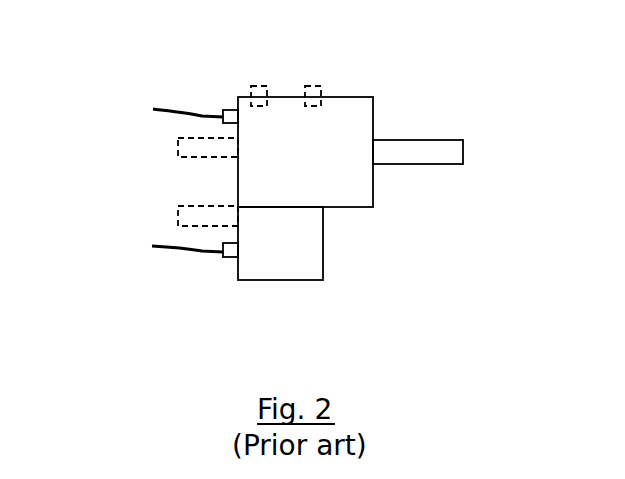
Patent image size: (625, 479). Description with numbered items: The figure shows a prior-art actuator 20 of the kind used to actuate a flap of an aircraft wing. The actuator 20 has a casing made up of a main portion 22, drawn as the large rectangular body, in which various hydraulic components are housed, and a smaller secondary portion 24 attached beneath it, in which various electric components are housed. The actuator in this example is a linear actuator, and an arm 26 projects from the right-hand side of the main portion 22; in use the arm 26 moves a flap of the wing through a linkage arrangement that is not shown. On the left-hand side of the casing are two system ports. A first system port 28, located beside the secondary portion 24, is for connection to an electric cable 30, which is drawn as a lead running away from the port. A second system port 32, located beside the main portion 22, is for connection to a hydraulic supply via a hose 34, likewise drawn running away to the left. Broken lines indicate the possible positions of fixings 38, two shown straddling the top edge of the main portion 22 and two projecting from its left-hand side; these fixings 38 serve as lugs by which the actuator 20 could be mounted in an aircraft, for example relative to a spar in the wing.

The actuator 20 is at (102, 121).
The main portion 22 is at (346, 119).
The secondary portion 24 is at (276, 252).
The arm 26 is at (463, 148).
The first system port 28 is at (231, 258).
The electric cable 30 is at (166, 258).
The second system port 32 is at (228, 110).
The hose 34 is at (172, 108).
The fixings 38 is at (312, 86).